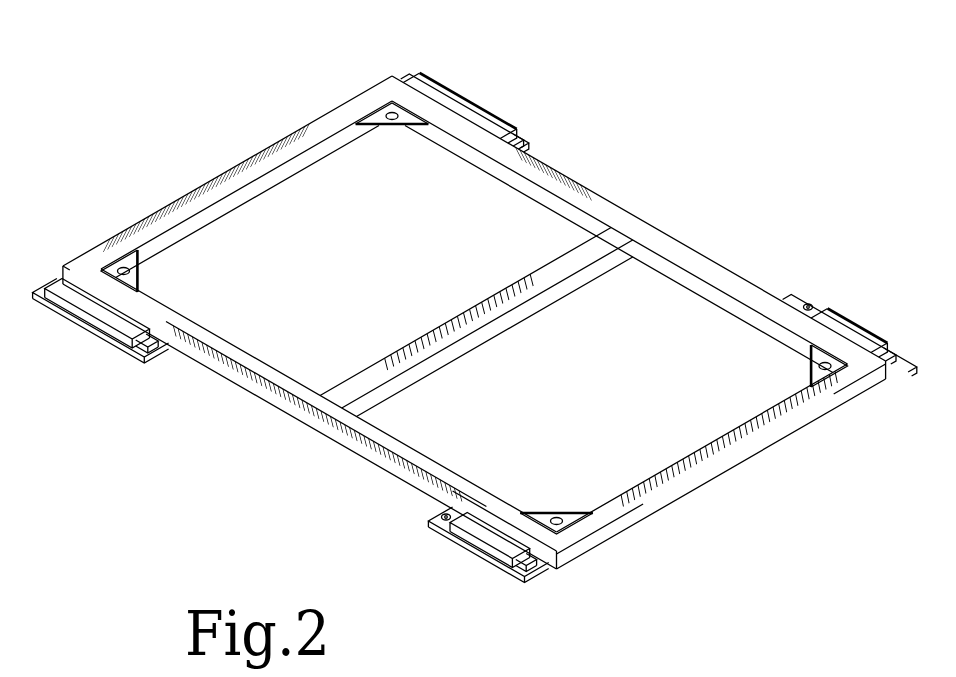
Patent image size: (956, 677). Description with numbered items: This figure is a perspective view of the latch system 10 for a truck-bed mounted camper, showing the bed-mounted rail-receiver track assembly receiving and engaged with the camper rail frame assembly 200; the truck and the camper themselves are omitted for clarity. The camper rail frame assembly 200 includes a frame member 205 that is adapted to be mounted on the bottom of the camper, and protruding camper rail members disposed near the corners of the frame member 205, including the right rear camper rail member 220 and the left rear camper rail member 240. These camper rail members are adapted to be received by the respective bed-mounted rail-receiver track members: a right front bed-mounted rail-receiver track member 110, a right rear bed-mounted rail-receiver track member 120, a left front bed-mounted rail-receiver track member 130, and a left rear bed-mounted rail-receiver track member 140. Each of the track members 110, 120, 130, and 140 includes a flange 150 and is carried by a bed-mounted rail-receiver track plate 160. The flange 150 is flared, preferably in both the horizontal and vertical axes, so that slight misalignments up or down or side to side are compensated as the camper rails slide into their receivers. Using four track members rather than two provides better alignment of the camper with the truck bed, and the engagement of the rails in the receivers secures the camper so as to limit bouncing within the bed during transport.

The latch system 10 is at (271, 108).
The right front bed-mounted rail-receiver track member 110 is at (447, 100).
The right rear bed-mounted rail-receiver track member 120 is at (848, 323).
The left front bed-mounted rail-receiver track member 130 is at (87, 307).
The left rear bed-mounted rail-receiver track member 140 is at (480, 535).
The flange 150 is at (514, 126).
The bed-mounted rail-receiver track plate 160 is at (523, 138).
The camper rail frame assembly 200 is at (647, 209).
The frame member 205 is at (703, 270).
The right rear camper rail member 220 is at (807, 303).
The left rear camper rail member 240 is at (437, 512).